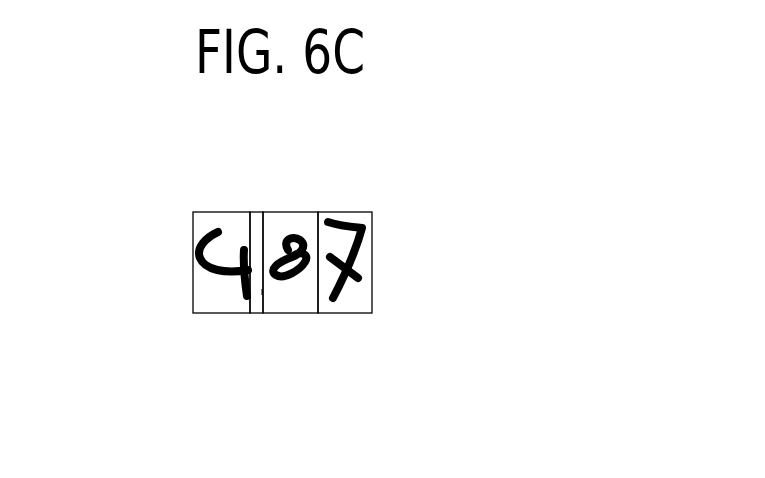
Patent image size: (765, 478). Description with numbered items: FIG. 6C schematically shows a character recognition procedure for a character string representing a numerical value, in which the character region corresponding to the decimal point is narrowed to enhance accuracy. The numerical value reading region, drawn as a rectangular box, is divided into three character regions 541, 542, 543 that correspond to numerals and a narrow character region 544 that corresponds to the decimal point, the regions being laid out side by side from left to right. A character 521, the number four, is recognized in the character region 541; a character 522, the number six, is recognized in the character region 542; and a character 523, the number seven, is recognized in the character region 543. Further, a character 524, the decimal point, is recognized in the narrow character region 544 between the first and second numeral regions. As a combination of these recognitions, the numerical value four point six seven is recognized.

The character region 541 is at (193, 237).
The character region 542 is at (290, 212).
The character region 543 is at (372, 247).
The character region 544 is at (256, 313).
The character 521 is at (210, 280).
The character 522 is at (291, 294).
The character 523 is at (355, 291).
The character 524 is at (260, 292).